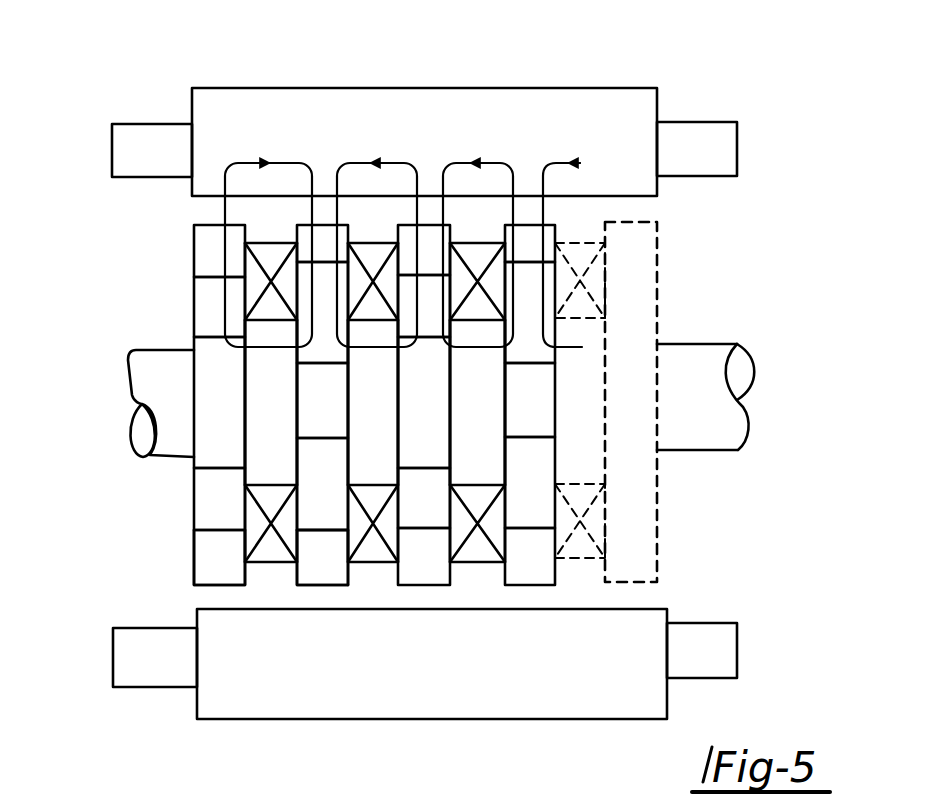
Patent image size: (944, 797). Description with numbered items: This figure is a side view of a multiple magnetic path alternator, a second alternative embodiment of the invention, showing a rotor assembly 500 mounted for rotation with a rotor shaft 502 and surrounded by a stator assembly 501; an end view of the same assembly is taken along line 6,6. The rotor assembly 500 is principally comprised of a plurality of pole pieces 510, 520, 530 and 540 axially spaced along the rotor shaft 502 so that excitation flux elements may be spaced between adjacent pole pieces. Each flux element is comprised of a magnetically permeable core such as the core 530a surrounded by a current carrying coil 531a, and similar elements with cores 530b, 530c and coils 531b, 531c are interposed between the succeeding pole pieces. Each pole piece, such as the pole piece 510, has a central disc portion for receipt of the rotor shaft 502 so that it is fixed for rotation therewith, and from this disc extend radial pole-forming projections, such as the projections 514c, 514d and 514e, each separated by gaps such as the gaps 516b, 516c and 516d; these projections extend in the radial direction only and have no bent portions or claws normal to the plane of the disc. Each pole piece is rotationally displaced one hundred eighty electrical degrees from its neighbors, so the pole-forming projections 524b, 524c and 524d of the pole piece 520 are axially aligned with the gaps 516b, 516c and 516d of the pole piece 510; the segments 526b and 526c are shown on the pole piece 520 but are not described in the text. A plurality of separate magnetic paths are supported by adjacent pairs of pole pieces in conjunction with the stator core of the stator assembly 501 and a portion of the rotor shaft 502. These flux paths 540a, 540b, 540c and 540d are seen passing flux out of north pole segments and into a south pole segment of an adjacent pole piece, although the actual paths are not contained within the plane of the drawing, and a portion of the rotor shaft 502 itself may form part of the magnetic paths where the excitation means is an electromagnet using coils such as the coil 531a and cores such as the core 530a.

The rotor assembly 500 is at (685, 255).
The stator assembly 501 is at (500, 88).
The rotor shaft 502 is at (690, 344).
The pole piece 510 is at (208, 562).
The radial pole-forming projection 514c is at (203, 502).
The radial pole-forming projection 514d is at (207, 290).
The radial pole-forming projection 514e is at (405, 788).
The gap 516b is at (228, 570).
The gap 516c is at (208, 387).
The gap 516d is at (207, 245).
The pole piece 520 is at (303, 560).
The pole-forming projection 524b is at (327, 573).
The pole-forming projection 524c is at (317, 432).
The pole-forming projection 524d is at (445, 235).
The pole segment 526b is at (297, 563).
The pole segment 526c is at (313, 352).
The pole piece 530 is at (397, 562).
The magnetically permeable core 530a is at (268, 453).
The magnetically permeable core 530b is at (347, 565).
The magnetically permeable core 530c is at (480, 458).
The current carrying coil 531a is at (267, 223).
The current carrying coil 531b is at (370, 223).
The current carrying coil 531c is at (475, 239).
The pole piece 540 is at (505, 573).
The flux path 540a is at (300, 163).
The flux path 540b is at (347, 163).
The flux path 540c is at (528, 133).
The flux path 540d is at (548, 163).
The section line 6 6 is at (132, 62).